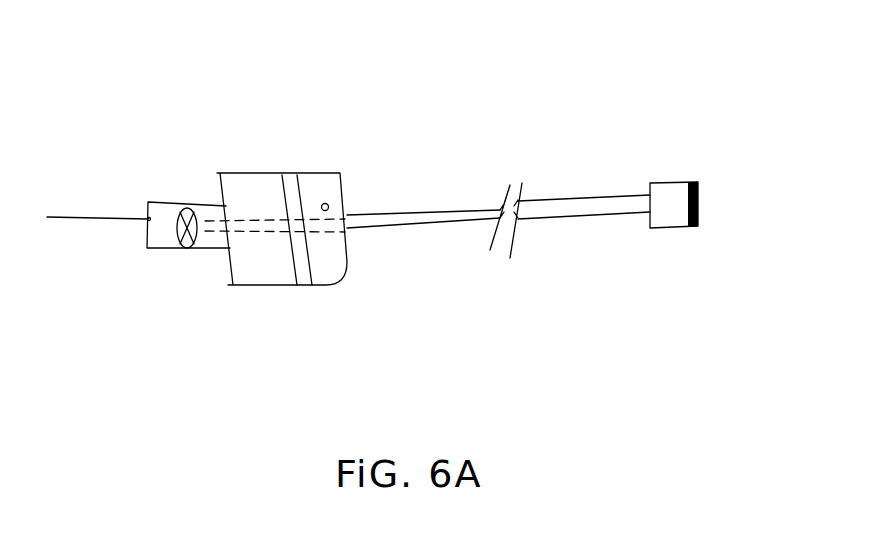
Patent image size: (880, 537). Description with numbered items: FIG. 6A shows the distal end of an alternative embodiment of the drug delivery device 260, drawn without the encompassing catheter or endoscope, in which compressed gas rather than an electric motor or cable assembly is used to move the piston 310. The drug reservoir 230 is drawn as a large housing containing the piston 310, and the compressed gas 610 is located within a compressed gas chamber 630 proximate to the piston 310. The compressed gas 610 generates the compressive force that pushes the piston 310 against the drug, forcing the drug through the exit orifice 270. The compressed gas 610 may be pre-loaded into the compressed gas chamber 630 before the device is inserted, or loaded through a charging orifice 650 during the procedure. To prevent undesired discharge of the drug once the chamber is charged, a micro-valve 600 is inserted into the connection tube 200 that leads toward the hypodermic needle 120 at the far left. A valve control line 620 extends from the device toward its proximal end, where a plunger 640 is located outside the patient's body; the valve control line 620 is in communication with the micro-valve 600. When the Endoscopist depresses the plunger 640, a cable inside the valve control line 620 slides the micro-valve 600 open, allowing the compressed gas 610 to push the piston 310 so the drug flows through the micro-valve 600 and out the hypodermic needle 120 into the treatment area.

The hypodermic needle 120 is at (71, 231).
The connection tube 200 is at (170, 194).
The drug reservoir 230 is at (255, 296).
The drug delivery device 260 is at (401, 73).
The exit orifice 270 is at (148, 230).
The piston 310 is at (314, 296).
The micro-valve 600 is at (194, 259).
The compressed gas 610 is at (351, 254).
The valve control line 620 is at (244, 221).
The compressed gas chamber 630 is at (331, 166).
The plunger 640 is at (712, 230).
The charging orifice 650 is at (340, 200).